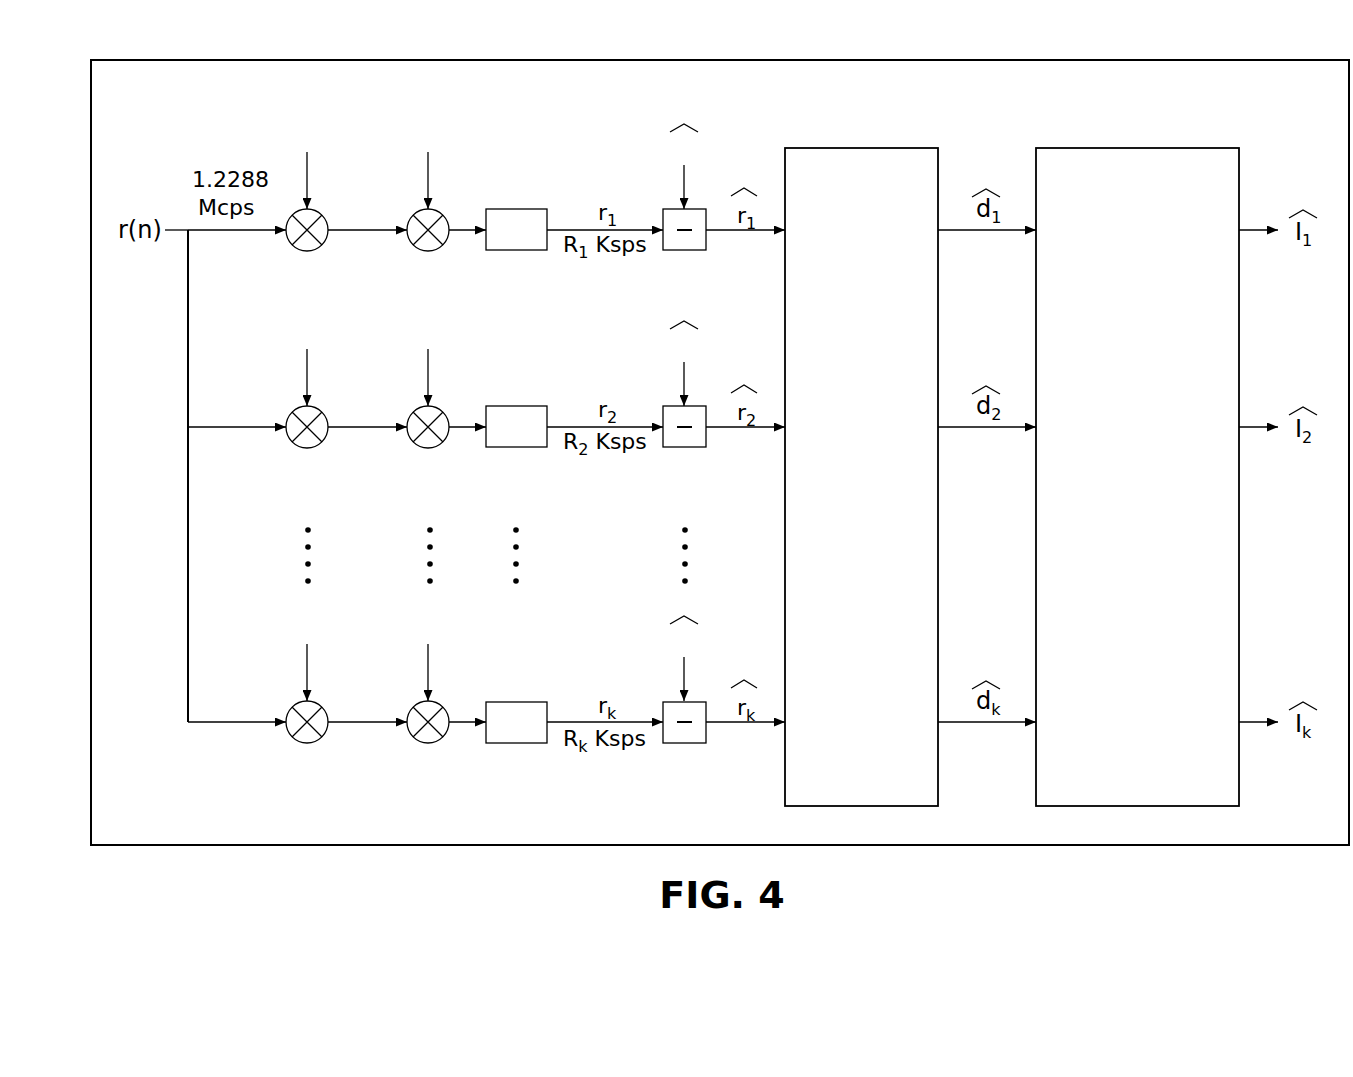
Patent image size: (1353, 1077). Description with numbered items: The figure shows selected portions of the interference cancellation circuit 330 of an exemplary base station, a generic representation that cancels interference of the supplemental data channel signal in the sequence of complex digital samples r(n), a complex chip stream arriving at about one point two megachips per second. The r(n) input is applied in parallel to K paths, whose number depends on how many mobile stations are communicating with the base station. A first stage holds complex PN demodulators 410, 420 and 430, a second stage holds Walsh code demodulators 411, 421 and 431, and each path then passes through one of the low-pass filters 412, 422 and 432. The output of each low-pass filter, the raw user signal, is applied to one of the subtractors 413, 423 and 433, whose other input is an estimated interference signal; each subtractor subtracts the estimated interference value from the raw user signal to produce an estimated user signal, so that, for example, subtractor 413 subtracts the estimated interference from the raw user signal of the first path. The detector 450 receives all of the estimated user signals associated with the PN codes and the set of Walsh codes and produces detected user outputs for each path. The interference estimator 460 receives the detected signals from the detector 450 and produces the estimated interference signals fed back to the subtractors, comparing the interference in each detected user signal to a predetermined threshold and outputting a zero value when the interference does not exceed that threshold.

The interference cancellation circuit 330 is at (718, 60).
The complex PN demodulator 410 is at (307, 252).
The Walsh code demodulator 411 is at (428, 252).
The low-pass filter 412 is at (516, 209).
The subtractor 413 is at (685, 251).
The complex PN demodulator 420 is at (307, 449).
The Walsh code demodulator 421 is at (428, 449).
The low-pass filter 422 is at (516, 406).
The subtractor 423 is at (685, 448).
The complex PN demodulator 430 is at (307, 744).
The Walsh code demodulator 431 is at (428, 744).
The low-pass filter 432 is at (516, 702).
The subtractor 433 is at (685, 744).
The detector 450 is at (858, 148).
The interference estimator 460 is at (1137, 148).